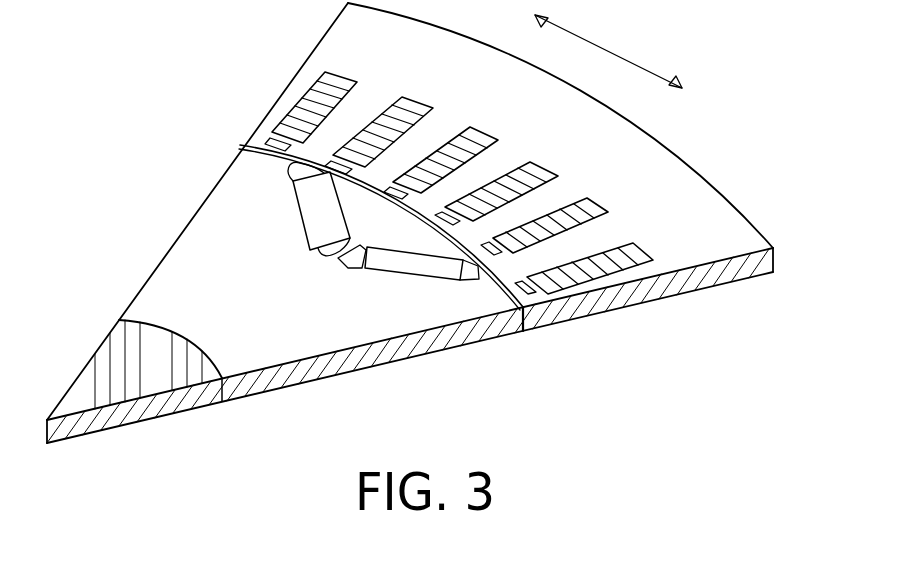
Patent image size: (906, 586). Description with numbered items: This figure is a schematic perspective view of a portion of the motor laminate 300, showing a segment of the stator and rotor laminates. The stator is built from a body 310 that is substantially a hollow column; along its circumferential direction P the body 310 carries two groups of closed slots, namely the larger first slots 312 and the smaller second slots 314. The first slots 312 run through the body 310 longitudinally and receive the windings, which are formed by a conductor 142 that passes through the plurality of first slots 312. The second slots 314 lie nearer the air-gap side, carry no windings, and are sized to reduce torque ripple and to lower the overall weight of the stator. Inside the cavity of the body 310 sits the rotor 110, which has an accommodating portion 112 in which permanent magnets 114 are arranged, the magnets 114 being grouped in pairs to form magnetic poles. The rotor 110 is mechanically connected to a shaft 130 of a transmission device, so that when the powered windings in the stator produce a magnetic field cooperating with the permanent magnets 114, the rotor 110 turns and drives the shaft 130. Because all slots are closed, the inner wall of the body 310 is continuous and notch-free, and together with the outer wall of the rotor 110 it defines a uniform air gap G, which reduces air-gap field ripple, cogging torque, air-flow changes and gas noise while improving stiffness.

The stator core segment 300 is at (290, 67).
The body 310 is at (670, 178).
The first slots 312 is at (460, 133).
The second slots 314 is at (386, 194).
The conductor 142 is at (628, 252).
The rotor 110 is at (180, 230).
The accommodating portion 112 is at (349, 266).
The permanent magnets 114 is at (413, 265).
The shaft 130 is at (128, 390).
The air gap G is at (523, 333).
The circumferential direction P is at (608, 51).